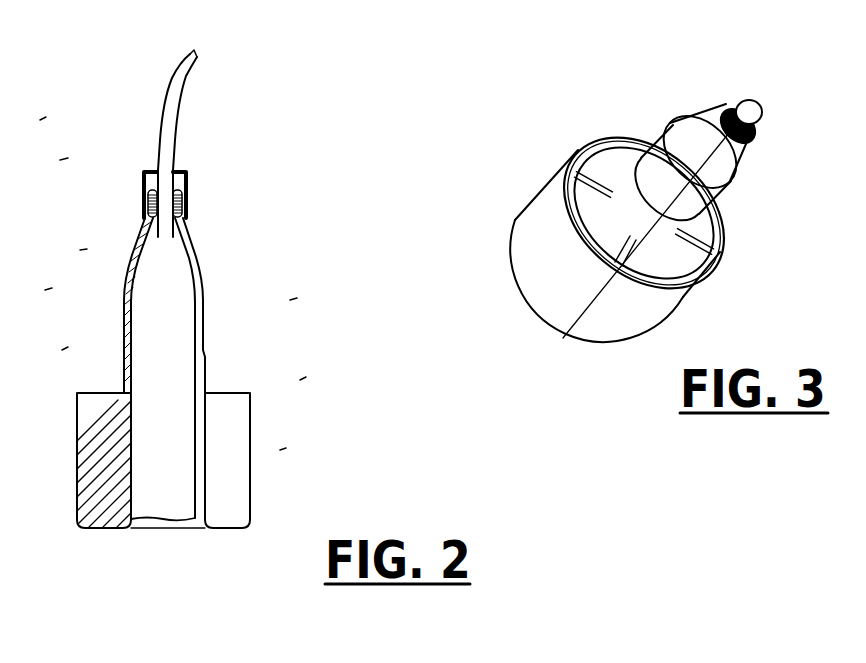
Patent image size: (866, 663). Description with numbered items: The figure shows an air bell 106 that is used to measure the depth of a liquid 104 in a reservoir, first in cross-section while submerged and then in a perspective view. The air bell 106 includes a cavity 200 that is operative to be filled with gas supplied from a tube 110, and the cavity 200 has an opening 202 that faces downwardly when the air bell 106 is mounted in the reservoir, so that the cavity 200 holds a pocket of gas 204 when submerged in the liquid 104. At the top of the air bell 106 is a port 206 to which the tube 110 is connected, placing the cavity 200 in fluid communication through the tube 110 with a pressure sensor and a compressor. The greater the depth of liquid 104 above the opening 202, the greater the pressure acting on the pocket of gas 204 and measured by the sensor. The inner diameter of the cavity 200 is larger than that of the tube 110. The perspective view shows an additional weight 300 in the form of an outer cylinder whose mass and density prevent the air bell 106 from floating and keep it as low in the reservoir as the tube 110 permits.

In FIG. 2, the liquid 104 is at (100, 320).
In FIG. 2, the air bell 106 is at (207, 283).
In FIG. 3, the air bell 106 is at (736, 162).
In FIG. 2, the tube 110 is at (178, 88).
In FIG. 2, the cavity 200 is at (168, 383).
In FIG. 2, the opening 202 is at (162, 528).
In FIG. 2, the pocket of gas 204 is at (185, 441).
In FIG. 2, the port 206 is at (188, 215).
In FIG. 3, the weight 300 is at (541, 222).